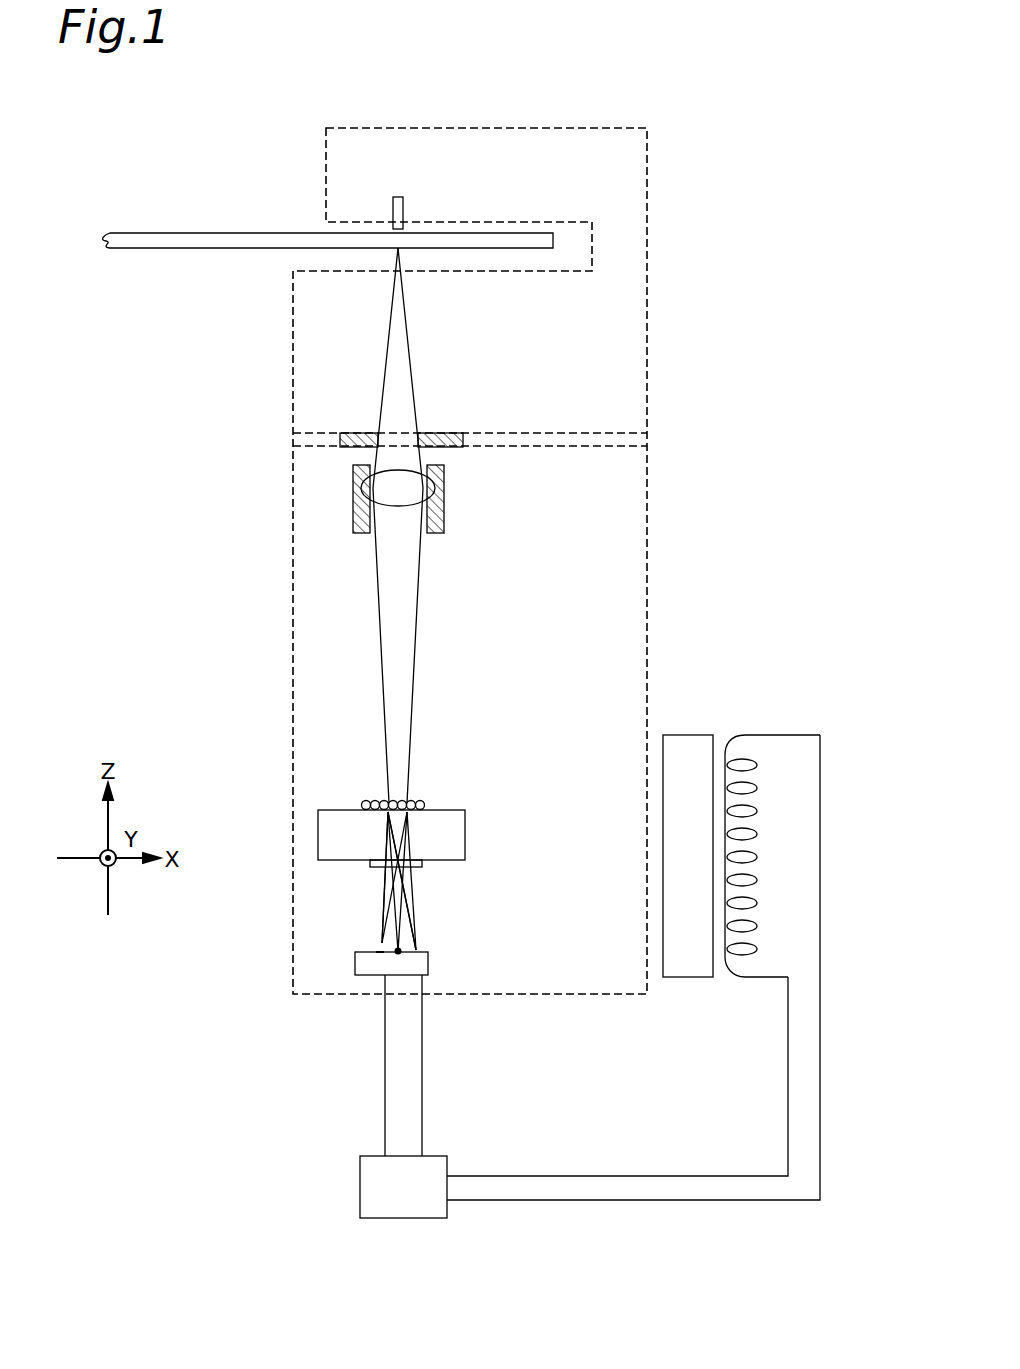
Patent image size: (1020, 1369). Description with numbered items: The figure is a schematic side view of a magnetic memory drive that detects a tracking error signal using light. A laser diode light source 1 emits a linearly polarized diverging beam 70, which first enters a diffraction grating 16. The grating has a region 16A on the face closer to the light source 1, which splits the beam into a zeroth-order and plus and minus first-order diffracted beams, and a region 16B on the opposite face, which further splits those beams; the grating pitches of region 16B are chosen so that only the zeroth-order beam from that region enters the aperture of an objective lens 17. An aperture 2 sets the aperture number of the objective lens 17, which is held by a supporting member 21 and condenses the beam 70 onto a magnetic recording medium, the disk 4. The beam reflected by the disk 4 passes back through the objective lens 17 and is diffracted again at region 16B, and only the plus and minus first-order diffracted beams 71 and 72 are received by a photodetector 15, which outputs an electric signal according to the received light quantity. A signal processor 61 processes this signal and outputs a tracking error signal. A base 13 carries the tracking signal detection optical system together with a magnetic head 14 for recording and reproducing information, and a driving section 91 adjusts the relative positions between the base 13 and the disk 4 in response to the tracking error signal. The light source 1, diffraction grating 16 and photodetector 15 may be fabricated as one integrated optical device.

The laser diode light source 1 is at (398, 956).
The aperture 2 is at (420, 440).
The magnetic recording medium 4 is at (224, 233).
The base 13 is at (648, 300).
The magnetic head 14 is at (399, 196).
The photodetector 15 is at (356, 968).
The diffraction grating 16 is at (318, 828).
The region of diffraction grating 16A is at (370, 867).
The region of diffraction grating 16B is at (362, 804).
The objective lens 17 is at (400, 507).
The supporting member 21 is at (353, 500).
The signal processor 61 is at (440, 1155).
The linearly polarized diverging beam 70 is at (380, 948).
The ±1st-order diffracted beam 71 is at (385, 940).
The ±1st-order diffracted beam 72 is at (410, 915).
The driving section 91 is at (720, 980).